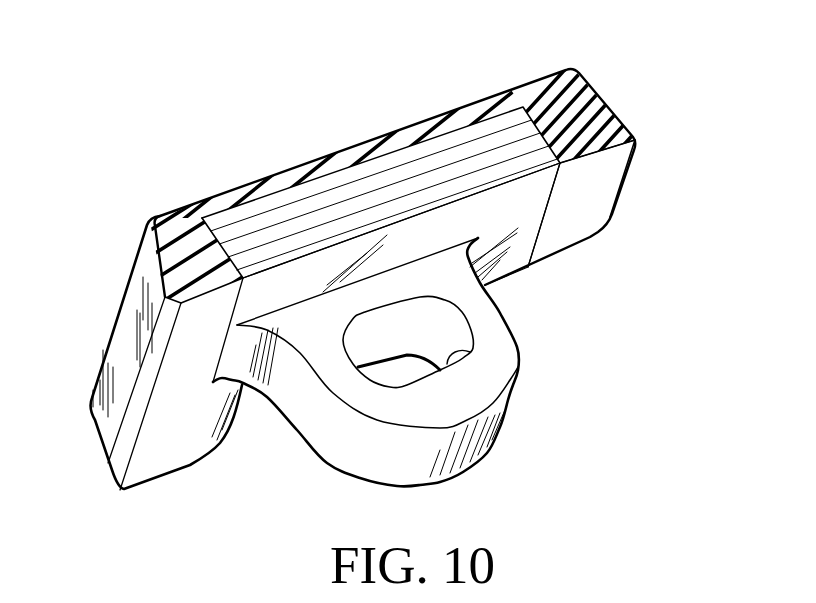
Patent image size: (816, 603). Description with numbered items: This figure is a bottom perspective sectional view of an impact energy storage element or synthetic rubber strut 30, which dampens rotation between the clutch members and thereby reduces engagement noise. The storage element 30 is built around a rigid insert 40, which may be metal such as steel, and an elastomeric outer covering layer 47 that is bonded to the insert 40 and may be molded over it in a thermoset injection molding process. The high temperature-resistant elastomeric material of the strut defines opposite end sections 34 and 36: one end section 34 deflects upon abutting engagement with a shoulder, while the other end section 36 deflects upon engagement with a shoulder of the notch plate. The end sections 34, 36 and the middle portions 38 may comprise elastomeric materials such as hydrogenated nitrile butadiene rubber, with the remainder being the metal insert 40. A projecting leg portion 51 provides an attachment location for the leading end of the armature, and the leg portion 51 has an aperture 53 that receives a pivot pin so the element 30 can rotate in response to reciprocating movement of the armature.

The impact energy storage element 30 is at (465, 104).
The end section 34 is at (155, 263).
The end section 36 is at (608, 103).
The middle portion 38 is at (374, 137).
The rigid insert 40 is at (513, 182).
The outer covering layer 47 is at (538, 76).
The projecting leg portion 51 is at (466, 473).
The aperture 53 is at (470, 352).